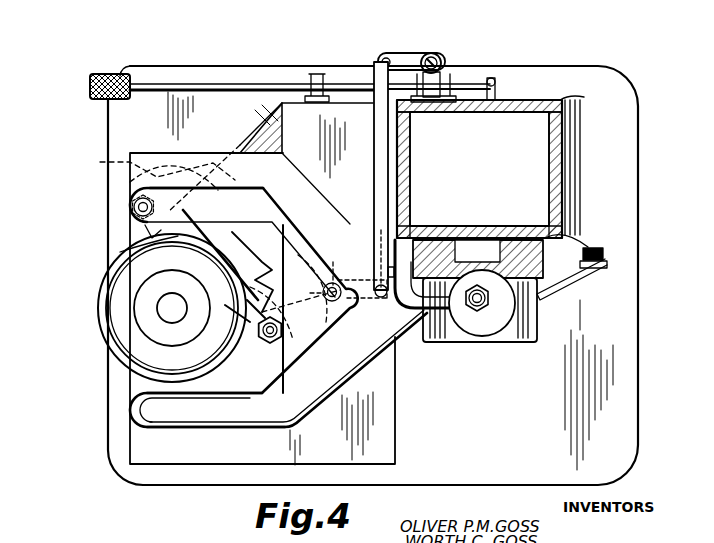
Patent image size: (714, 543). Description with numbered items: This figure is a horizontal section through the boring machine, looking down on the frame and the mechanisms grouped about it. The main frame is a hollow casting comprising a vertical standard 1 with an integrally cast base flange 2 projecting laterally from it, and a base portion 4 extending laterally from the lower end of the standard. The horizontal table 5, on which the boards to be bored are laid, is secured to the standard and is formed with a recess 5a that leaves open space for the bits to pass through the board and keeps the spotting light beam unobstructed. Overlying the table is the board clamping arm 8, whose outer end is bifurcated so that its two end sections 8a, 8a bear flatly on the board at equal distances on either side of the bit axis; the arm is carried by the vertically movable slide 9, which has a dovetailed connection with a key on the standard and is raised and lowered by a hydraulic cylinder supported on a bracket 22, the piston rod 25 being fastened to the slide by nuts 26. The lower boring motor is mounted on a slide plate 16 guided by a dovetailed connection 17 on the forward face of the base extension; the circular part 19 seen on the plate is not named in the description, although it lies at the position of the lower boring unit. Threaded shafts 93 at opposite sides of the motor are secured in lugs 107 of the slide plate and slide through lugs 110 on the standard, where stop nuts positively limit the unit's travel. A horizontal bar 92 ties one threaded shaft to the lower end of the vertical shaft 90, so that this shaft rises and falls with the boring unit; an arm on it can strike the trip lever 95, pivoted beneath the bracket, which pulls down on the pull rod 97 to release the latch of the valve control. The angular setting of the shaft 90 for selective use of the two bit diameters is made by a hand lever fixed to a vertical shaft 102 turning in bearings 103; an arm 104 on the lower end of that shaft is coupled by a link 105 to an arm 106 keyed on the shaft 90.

The vertical standard 1 is at (565, 180).
The base flange 2 is at (620, 143).
The base portion 4 is at (247, 141).
The horizontal table 5 is at (240, 452).
The recess 5a is at (283, 372).
The board clamping arm 8 is at (395, 340).
The end sections 8a is at (233, 193).
The vertically movable slide 9 is at (562, 281).
The slide plate 16 is at (123, 253).
The dovetailed connection 17 is at (264, 263).
The wheel 19 is at (98, 322).
The bracket 22 is at (538, 314).
The piston rod 25 is at (498, 334).
The nuts 26 is at (480, 305).
The vertical shaft 90 is at (350, 320).
The horizontal bar 92 is at (318, 326).
The threaded shaft 93 is at (133, 205).
The trip lever 95 is at (606, 268).
The pull rod 97 is at (594, 250).
The vertical shaft 102 is at (437, 54).
The bearings 103 is at (434, 92).
The arm 104 is at (404, 58).
The link 105 is at (380, 118).
The arm 106 is at (355, 280).
The lugs 107 is at (141, 231).
The lugs 110 is at (130, 163).